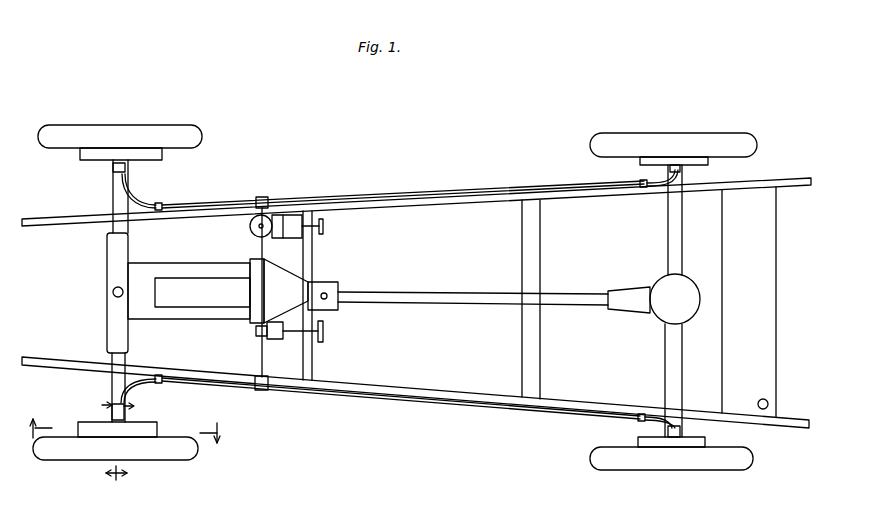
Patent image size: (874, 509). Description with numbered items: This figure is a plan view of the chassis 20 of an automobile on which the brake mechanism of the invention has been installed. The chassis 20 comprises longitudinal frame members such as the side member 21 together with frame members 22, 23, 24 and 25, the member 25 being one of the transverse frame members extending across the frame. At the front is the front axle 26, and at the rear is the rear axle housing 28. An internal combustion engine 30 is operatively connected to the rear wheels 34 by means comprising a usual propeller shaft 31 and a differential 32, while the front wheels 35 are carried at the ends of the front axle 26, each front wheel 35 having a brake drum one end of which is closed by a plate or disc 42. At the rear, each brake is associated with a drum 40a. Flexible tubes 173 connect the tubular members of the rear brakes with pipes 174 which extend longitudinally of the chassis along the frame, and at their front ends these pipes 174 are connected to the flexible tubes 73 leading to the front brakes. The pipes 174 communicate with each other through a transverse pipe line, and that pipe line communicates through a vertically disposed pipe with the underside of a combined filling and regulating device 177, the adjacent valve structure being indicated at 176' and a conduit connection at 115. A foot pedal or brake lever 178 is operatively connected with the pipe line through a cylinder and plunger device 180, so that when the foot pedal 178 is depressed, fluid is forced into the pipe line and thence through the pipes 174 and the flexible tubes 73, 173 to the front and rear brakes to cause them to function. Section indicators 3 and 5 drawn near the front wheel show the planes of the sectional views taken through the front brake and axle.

The chassis 20 is at (757, 184).
The longitudinal frame member 21 is at (406, 208).
The transverse frame member 22 is at (128, 229).
The transverse frame member 23 is at (311, 263).
The transverse frame member 24 is at (522, 251).
The transverse frame member 25 is at (727, 257).
The front axle 26 is at (112, 380).
The rear axle housing 28 is at (670, 368).
The internal combustion engine 30 is at (210, 318).
The propeller shaft 31 is at (414, 298).
The differential 32 is at (660, 284).
The rear wheels 34 is at (618, 138).
The front wheels 35 is at (196, 134).
The brake drum 40a is at (642, 164).
The plate or disc 42 is at (162, 156).
The flexible tubes 73 is at (136, 200).
The brake fluid conduit 115 is at (260, 356).
The flexible tubes 173 is at (682, 171).
The pipes 174 is at (433, 200).
The valve body 176' is at (271, 234).
The combined filling and regulating device 177 is at (249, 227).
The foot pedal or brake lever 178 is at (296, 338).
The cylinder and plunger device 180 is at (278, 322).
The section line 3- 3 is at (126, 433).
The section line 5- 5 is at (112, 446).